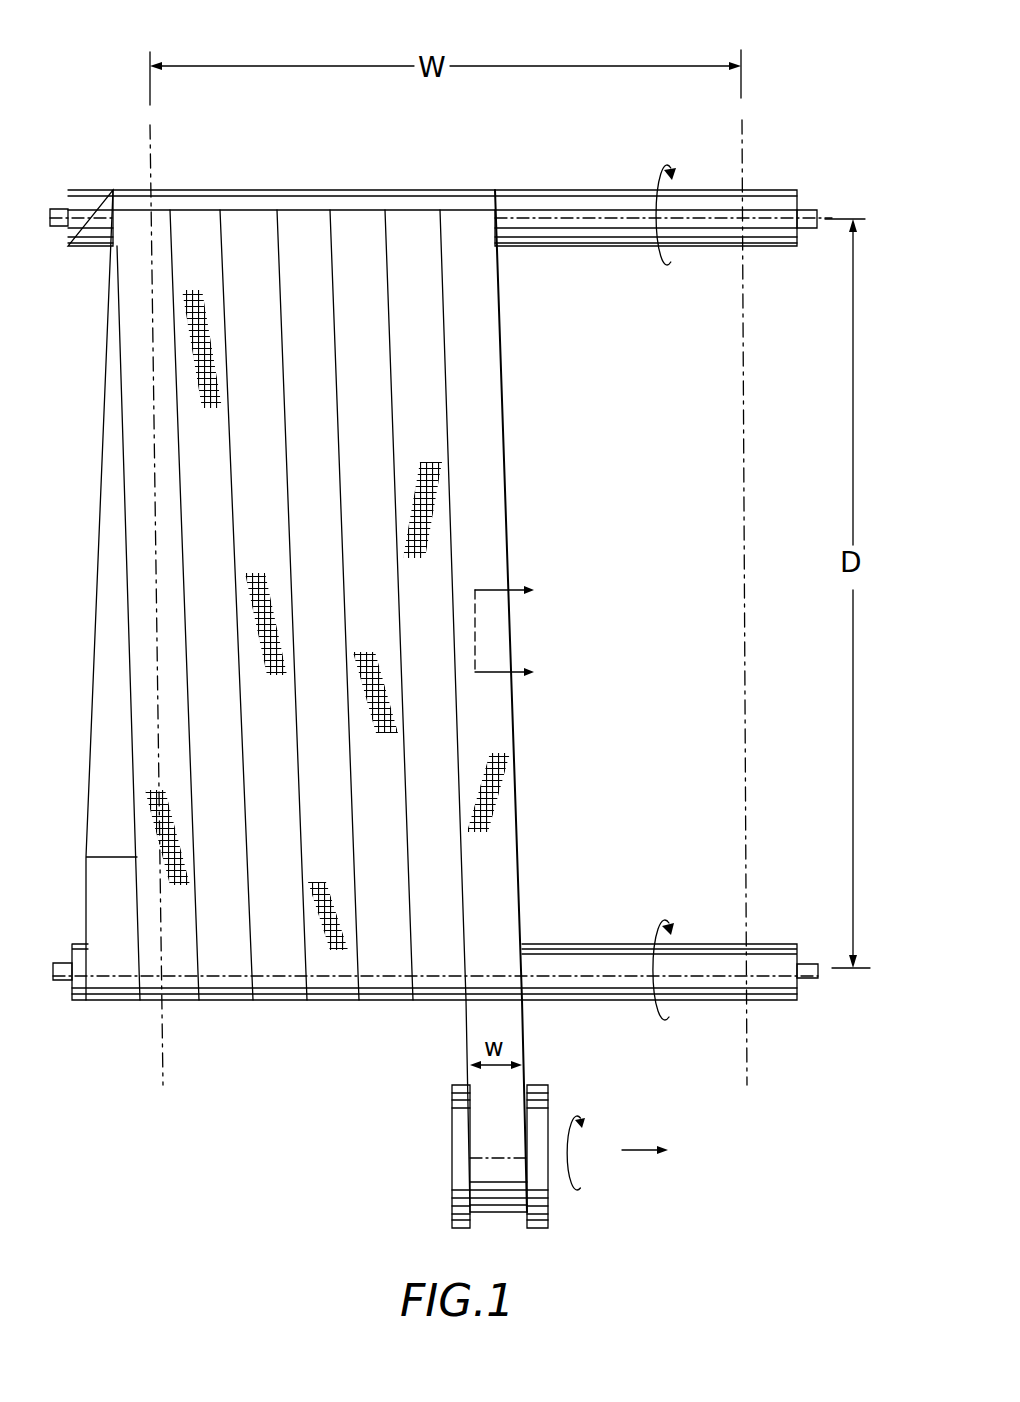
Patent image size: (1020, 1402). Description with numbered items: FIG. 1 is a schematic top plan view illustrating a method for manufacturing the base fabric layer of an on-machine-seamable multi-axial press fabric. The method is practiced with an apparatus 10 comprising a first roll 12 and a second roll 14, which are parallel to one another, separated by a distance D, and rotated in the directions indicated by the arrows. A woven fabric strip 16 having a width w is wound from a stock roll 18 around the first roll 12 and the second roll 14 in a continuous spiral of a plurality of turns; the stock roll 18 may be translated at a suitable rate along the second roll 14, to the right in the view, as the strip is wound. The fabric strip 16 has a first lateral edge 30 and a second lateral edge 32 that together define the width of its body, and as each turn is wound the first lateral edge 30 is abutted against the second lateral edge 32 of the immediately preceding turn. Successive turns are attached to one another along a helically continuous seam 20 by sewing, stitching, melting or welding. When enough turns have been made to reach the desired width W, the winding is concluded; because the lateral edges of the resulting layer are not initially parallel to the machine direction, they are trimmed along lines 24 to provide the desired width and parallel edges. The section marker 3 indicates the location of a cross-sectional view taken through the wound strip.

The apparatus 10 is at (836, 24).
The first roll 12 is at (770, 202).
The second roll 14 is at (697, 988).
The woven fabric strip 16 is at (336, 678).
The stock roll 18 is at (453, 1142).
The helically continuous seam 20 is at (280, 262).
The trim lines 24 is at (149, 125).
The first lateral edge 30 is at (466, 1022).
The second lateral edge 32 is at (526, 1032).
The section line 3- 3 is at (508, 618).